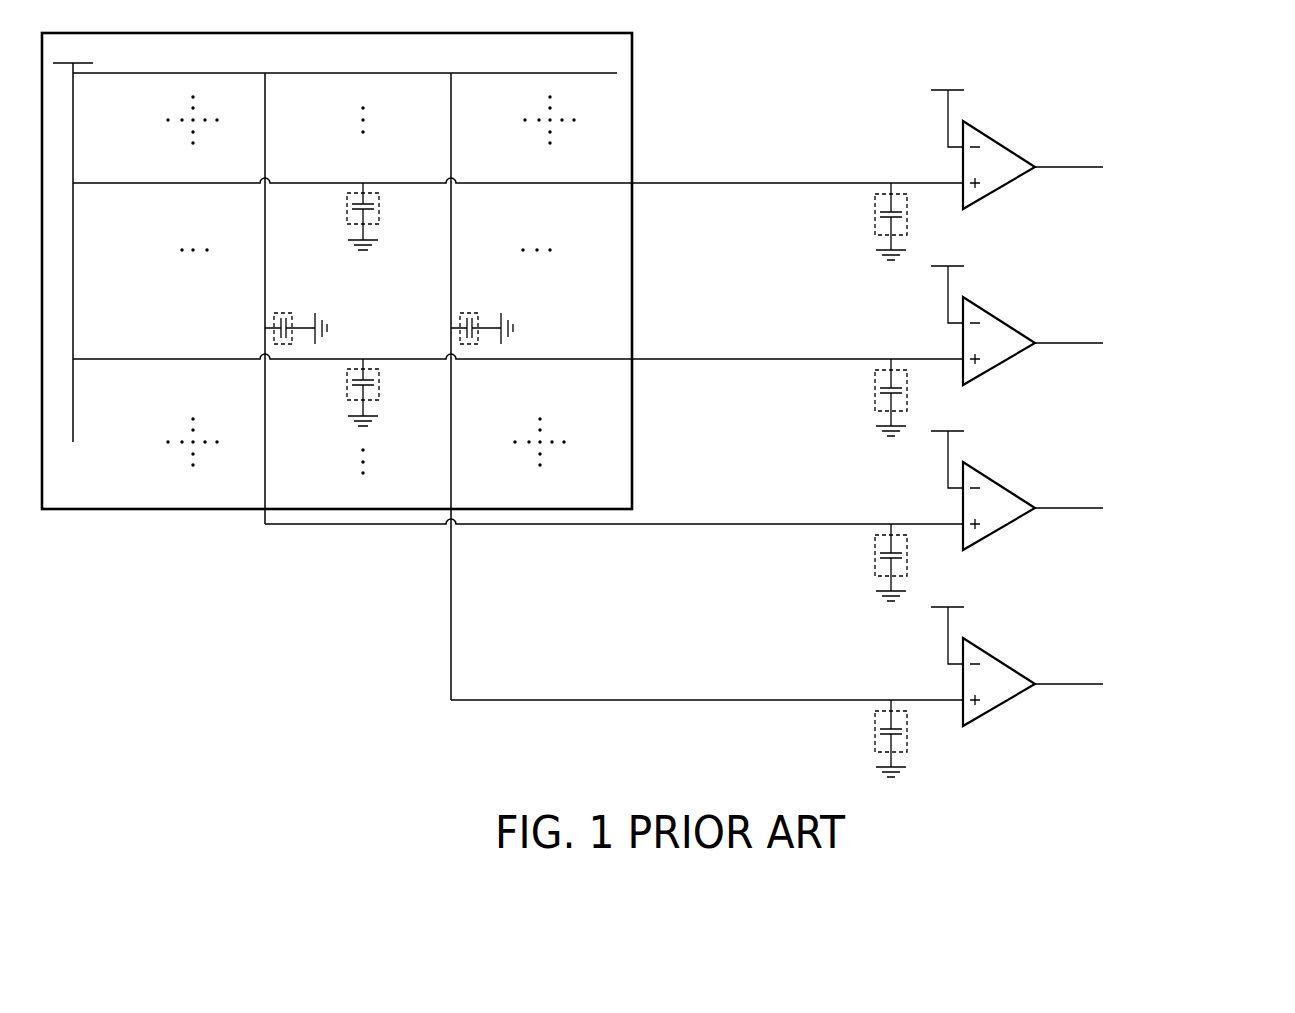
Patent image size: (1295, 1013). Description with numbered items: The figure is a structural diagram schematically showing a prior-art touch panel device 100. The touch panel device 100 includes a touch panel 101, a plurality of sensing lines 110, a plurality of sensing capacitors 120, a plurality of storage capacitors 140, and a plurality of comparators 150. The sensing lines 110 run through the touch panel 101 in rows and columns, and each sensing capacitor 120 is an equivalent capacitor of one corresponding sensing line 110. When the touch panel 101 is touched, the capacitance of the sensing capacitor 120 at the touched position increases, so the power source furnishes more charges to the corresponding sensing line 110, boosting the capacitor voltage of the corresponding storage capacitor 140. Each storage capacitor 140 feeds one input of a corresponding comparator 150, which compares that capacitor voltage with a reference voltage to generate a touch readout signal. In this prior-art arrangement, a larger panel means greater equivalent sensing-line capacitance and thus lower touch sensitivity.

The touch panel device 100 is at (1185, 85).
The touch panel 101 is at (632, 62).
The sensing lines 110 is at (117, 183).
The sensing capacitors 120 is at (379, 207).
The storage capacitors 140 is at (875, 222).
The comparators 150 is at (999, 139).